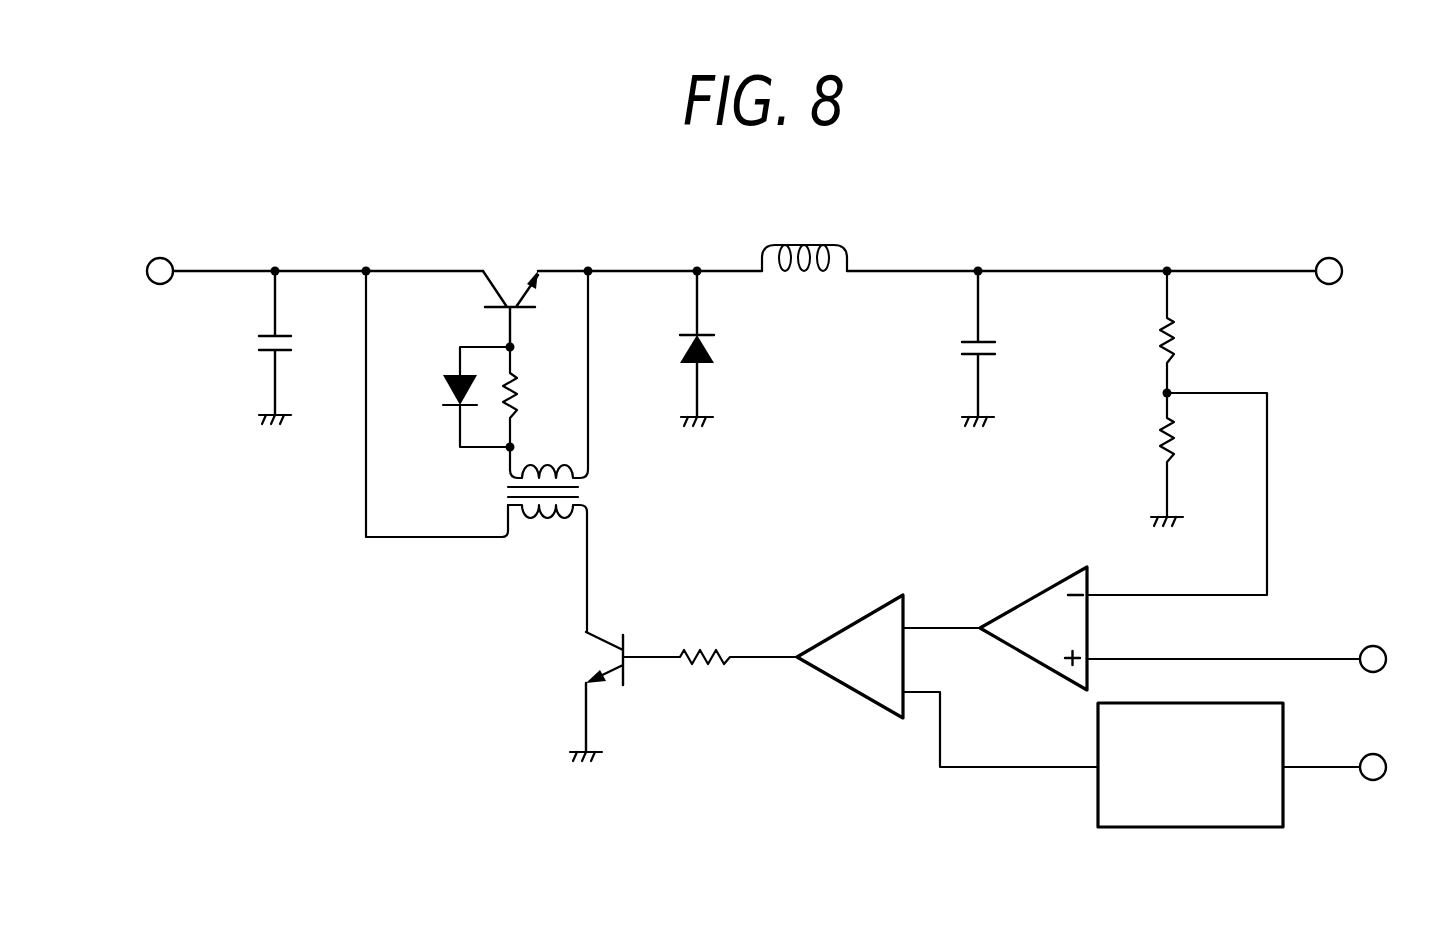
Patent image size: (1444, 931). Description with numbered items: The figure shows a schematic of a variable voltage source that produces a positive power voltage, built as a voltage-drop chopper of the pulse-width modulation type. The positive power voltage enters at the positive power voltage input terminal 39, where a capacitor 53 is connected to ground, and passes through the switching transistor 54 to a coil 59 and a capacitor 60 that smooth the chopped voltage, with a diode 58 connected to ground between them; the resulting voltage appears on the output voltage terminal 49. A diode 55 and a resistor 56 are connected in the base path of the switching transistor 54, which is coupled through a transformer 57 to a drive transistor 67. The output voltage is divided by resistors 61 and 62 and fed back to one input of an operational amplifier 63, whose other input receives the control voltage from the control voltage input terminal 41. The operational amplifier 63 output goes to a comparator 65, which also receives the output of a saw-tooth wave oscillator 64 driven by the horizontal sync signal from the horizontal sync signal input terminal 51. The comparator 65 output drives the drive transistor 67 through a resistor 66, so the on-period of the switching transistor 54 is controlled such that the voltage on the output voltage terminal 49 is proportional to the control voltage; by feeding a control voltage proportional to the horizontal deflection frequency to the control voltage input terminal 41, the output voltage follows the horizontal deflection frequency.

The positive power voltage input terminal 39 is at (169, 261).
The output voltage terminal 49 is at (1321, 262).
The control voltage input terminal 41 is at (1380, 649).
The horizontal sync signal input terminal 51 is at (1379, 764).
The capacitor 53 is at (255, 345).
The switching transistor 54 is at (513, 272).
The diode 55 is at (444, 382).
The resistor 56 is at (520, 401).
The transformer 57 is at (590, 496).
The diode 58 is at (716, 341).
The coil 59 is at (800, 244).
The capacitor 60 is at (998, 351).
The resistor 61 is at (1176, 347).
The resistor 62 is at (1178, 451).
The operational amplifier 63 is at (1010, 606).
The saw-tooth wave oscillator 64 is at (1242, 706).
The comparator 65 is at (830, 632).
The resistor 66 is at (708, 629).
The drive transistor 67 is at (603, 628).